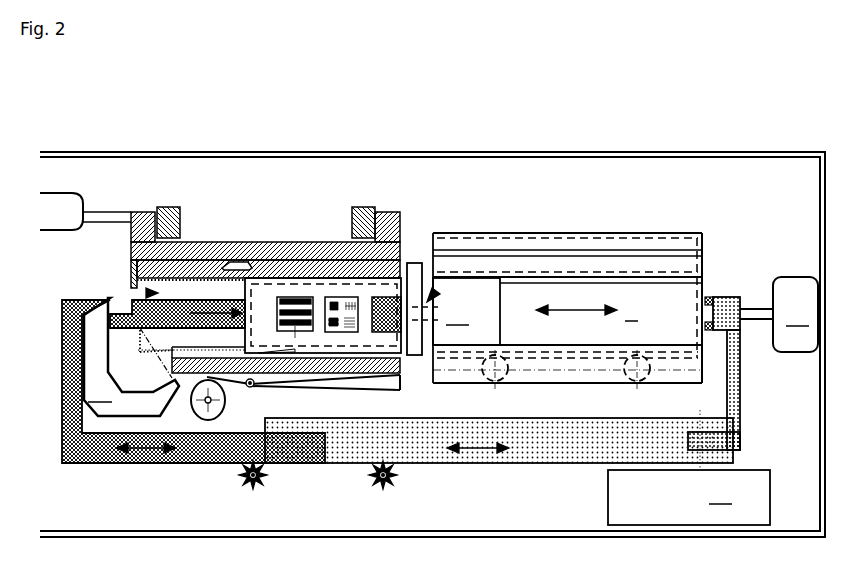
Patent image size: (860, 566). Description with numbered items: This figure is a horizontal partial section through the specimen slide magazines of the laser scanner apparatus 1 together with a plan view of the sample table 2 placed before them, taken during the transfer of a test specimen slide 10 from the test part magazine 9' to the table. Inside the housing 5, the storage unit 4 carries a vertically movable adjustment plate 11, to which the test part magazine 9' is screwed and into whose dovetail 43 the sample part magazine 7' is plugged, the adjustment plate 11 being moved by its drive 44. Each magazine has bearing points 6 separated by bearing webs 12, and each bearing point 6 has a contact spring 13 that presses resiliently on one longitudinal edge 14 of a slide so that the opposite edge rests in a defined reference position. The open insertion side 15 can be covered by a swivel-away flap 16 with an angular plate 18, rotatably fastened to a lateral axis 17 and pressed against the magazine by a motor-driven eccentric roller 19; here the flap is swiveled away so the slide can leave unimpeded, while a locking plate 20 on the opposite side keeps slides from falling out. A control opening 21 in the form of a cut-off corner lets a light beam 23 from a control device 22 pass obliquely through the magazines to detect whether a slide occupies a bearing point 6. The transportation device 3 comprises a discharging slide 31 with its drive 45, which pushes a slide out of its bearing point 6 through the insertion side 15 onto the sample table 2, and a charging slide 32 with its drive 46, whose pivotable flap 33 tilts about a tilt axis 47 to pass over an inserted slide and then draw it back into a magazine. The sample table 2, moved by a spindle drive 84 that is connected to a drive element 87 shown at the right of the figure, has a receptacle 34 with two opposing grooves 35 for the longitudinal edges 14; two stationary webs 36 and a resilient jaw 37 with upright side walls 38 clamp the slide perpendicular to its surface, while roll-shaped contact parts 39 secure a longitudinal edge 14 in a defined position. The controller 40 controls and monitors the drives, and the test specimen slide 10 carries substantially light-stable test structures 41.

The laser scanner apparatus 1 is at (680, 102).
The sample table 2 is at (567, 308).
The transportation device 3 is at (397, 409).
The storage unit 4 is at (100, 195).
The housing 5 is at (678, 154).
The bearing points 6 is at (138, 291).
The sample part magazine 7' is at (268, 229).
The test part magazine 9' is at (243, 238).
The test specimen slide 10 is at (466, 311).
The adjustment plate 11 is at (331, 242).
The bearing webs 12 is at (163, 330).
The contact spring 13 is at (252, 387).
The longitudinal edges 14 is at (413, 263).
The insertion side 15 is at (434, 285).
The swivel-away flap 16 is at (377, 390).
The axis 17 is at (229, 466).
The angular plate 18 is at (196, 449).
The eccentric roller 19 is at (205, 416).
The locking plate 20 is at (131, 258).
The control opening 21 is at (84, 366).
The control device 22 is at (131, 357).
The light beam 23 is at (130, 343).
The discharging slide 31 is at (106, 466).
The charging slide 32 is at (426, 452).
The pivotable flap 33 is at (737, 368).
The receptacle 34 is at (525, 305).
The grooves 35 is at (572, 355).
The stationary webs 36 is at (508, 283).
The jaw 37 is at (665, 308).
The upright side walls 38 is at (682, 280).
The contact parts 39 is at (633, 375).
The controller 40 is at (689, 467).
The test structures 41 is at (370, 333).
The dovetail 43 is at (222, 243).
The drive 44 is at (58, 231).
The drive 45 is at (262, 482).
The drive 46 is at (393, 481).
The tilt axis 47 is at (742, 443).
The spindle drive 84 is at (752, 312).
The actuator 87 is at (795, 314).